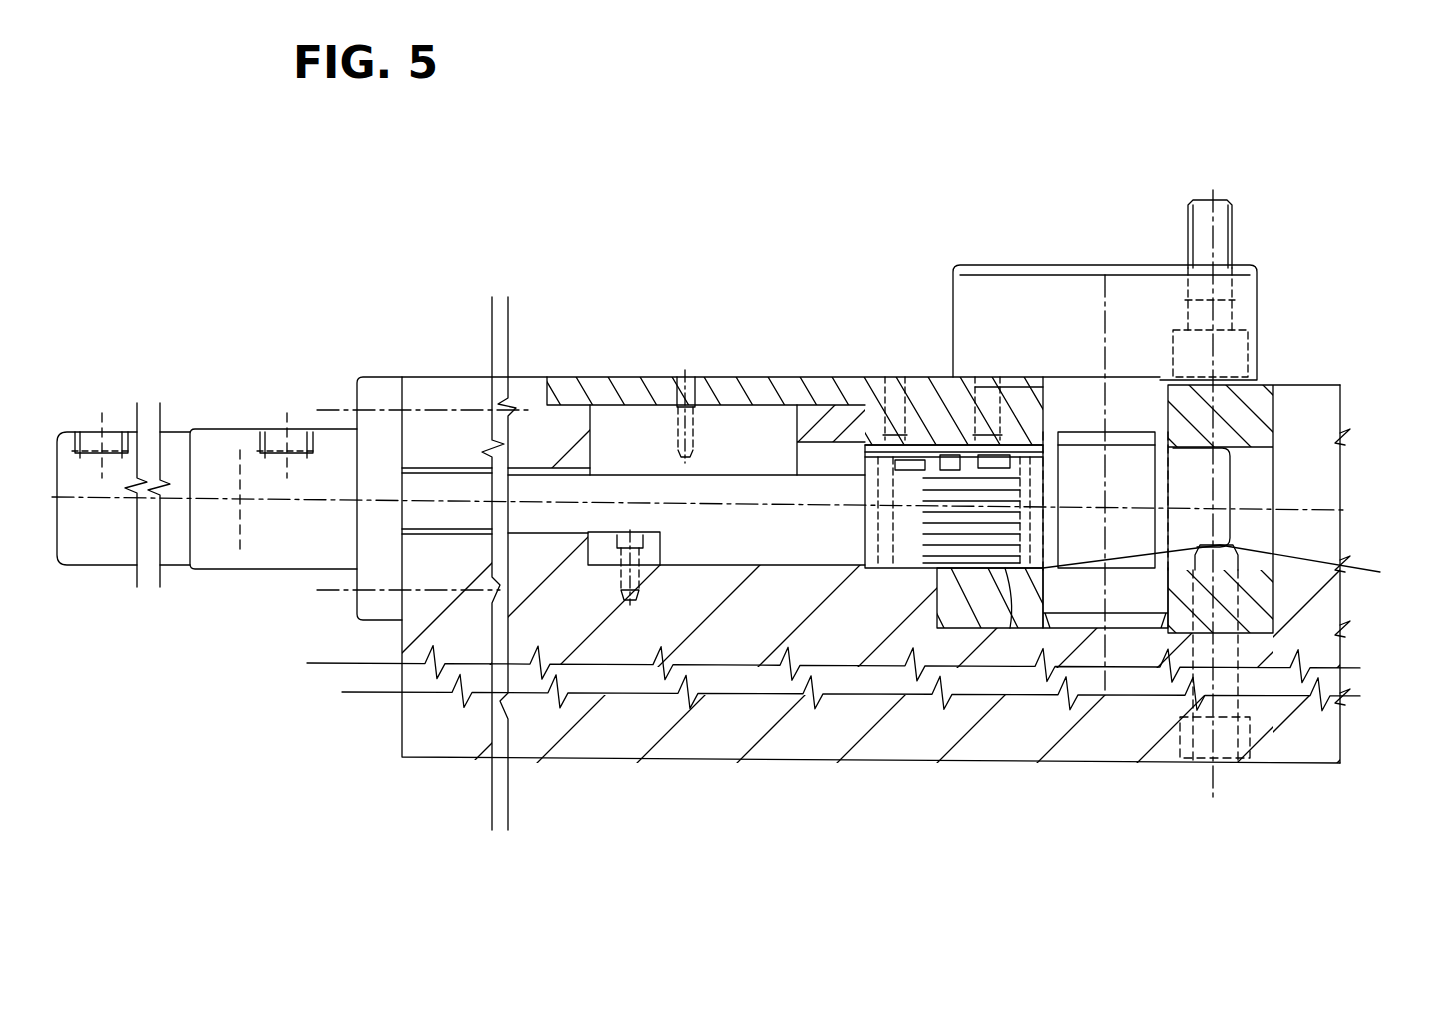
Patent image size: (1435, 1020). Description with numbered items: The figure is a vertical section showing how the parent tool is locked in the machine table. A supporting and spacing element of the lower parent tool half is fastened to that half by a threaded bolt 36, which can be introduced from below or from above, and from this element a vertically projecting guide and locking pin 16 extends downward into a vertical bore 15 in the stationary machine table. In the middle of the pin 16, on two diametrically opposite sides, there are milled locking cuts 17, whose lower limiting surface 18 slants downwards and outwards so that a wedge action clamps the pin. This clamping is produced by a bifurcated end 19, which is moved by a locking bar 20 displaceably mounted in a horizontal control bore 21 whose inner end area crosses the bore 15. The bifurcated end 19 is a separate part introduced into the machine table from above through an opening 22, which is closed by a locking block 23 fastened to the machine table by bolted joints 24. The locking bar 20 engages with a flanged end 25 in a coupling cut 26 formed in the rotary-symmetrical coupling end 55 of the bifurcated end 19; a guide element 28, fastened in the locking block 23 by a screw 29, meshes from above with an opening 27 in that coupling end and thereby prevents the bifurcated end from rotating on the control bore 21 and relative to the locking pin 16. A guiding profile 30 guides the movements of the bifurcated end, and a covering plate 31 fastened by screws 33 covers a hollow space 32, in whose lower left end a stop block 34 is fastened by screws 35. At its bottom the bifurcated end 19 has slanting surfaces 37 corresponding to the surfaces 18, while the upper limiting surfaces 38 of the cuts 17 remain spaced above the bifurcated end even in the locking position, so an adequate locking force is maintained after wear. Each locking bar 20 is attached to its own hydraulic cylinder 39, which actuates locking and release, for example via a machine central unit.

The vertical bores 15 is at (1170, 424).
The guide and locking pin 16 is at (1067, 600).
The milled locking cut 17 is at (1090, 545).
The lower limiting surface 18 is at (1130, 578).
The bifurcated end 19 is at (1213, 482).
The locking bar 20 is at (725, 515).
The horizontal control bore 21 is at (958, 578).
The opening 22 is at (1280, 400).
The locking block 23 is at (1247, 398).
The bolted joint 24 is at (1218, 757).
The flanged end 25 is at (903, 488).
The coupling cut 26 is at (912, 467).
The opening 27 is at (950, 470).
The guide element 28 is at (968, 457).
The screw 29 is at (993, 450).
The guiding profile 30 is at (817, 425).
The covering plate 31 is at (727, 392).
The hollow space 32 is at (626, 442).
The screws 33 is at (685, 390).
The stop block 34 is at (603, 550).
The screws 35 is at (628, 600).
The threaded bolt 36 is at (1208, 233).
The slanting surfaces 37 is at (1147, 553).
The upper limiting surface 38 is at (1130, 420).
The hydraulic cylinder 39 is at (212, 468).
The rotary-symmetrical coupling end 55 is at (983, 549).